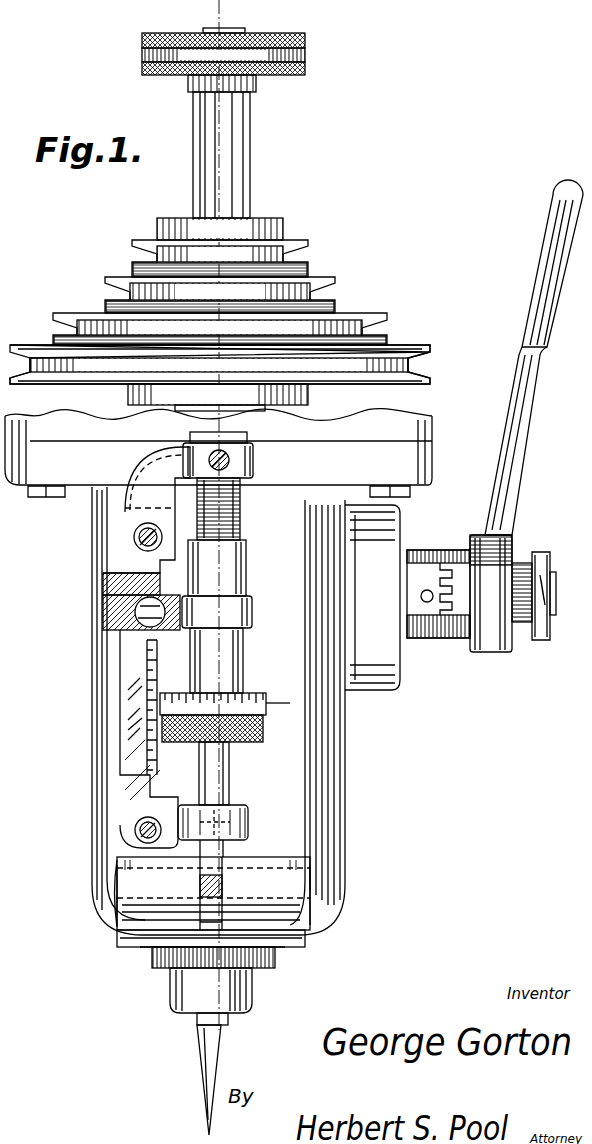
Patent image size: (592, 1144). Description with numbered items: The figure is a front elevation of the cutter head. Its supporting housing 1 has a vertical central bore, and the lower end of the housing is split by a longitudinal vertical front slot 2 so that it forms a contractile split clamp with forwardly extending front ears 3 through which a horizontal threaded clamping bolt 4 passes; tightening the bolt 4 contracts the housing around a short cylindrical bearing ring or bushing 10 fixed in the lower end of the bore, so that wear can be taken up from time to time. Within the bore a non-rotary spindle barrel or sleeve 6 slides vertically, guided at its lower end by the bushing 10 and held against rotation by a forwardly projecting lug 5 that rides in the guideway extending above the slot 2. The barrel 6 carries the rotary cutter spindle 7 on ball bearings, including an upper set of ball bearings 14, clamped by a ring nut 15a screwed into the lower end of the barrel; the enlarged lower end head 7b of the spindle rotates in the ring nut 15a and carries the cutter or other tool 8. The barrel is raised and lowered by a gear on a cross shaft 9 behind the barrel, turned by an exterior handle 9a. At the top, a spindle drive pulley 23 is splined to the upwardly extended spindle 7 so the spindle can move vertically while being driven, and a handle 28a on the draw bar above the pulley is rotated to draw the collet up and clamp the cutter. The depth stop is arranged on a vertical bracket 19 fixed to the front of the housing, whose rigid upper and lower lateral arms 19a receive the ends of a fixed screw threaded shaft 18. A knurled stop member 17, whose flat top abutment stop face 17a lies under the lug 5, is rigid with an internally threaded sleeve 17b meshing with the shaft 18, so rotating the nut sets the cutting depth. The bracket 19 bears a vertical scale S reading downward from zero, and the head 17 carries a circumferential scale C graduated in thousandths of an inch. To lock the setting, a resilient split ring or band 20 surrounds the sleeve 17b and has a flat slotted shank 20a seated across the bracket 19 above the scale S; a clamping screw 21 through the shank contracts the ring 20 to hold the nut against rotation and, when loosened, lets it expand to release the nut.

The supporting housing 1 is at (330, 750).
The longitudinal vertical front slot 2 is at (240, 23).
The front ears 3 is at (258, 862).
The clamping bolt 4 is at (117, 886).
The lug 5 is at (122, 910).
The spindle barrel or sleeve 6 is at (282, 949).
The rotary cutter spindle 7 is at (250, 148).
The lower end head of spindle 7b is at (252, 990).
The rotary cutter or tool 8 is at (207, 1078).
The cross shaft 9 is at (556, 598).
The handle 9a is at (525, 413).
The bearing ring or bushing 10 is at (300, 940).
The upper set of ball bearings 14 is at (279, 594).
The ring nut 15a is at (170, 970).
The stop member 17 is at (258, 740).
The top abutment stop face 17a is at (250, 693).
The internally screw threaded sleeve 17b is at (280, 642).
The screw threaded shaft 18 is at (240, 506).
The bracket 19 is at (120, 668).
The upper and lower lateral arms 19a is at (253, 460).
The split ring or band 20 is at (243, 590).
The shank 20a is at (105, 608).
The clamping screw 21 is at (140, 614).
The spindle drive pulley 23 is at (300, 244).
The handle 28a is at (305, 57).
The circumferential scale C is at (283, 704).
The vertical scale S is at (150, 675).